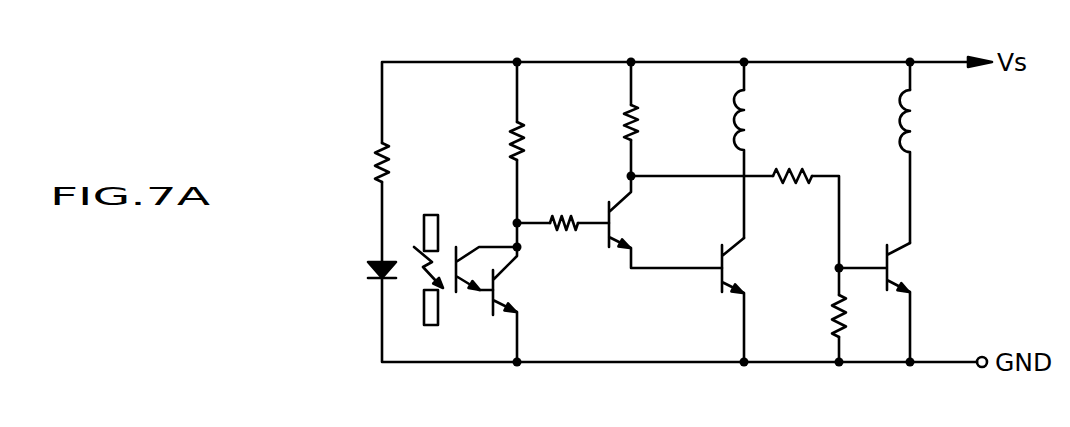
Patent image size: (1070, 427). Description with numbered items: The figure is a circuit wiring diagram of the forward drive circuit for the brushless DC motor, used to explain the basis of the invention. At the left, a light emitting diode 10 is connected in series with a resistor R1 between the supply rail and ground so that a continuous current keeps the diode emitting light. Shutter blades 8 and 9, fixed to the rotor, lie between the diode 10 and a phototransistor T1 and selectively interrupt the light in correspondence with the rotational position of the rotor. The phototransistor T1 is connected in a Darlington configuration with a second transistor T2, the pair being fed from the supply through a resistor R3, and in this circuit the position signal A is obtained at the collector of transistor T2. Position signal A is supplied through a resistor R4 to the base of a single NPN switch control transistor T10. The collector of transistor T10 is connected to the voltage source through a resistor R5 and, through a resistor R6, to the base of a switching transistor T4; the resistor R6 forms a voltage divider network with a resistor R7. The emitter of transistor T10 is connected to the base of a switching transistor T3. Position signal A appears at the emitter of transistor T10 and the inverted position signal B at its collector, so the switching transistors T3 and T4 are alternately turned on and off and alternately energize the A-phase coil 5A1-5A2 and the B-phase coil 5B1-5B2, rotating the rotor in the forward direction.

The resistor R1 is at (375, 170).
The resistor R3 is at (510, 140).
The resistor R4 is at (563, 239).
The resistor R5 is at (624, 121).
The resistor R6 is at (796, 185).
The resistor R7 is at (847, 313).
The phototransistor T1 is at (458, 266).
The second transistor T2 is at (498, 293).
The switching transistor T3 is at (728, 268).
The switching transistor T4 is at (894, 267).
The switch control transistor T10 is at (614, 222).
The shutter blade 8 is at (431, 214).
The shutter blade 9 is at (436, 306).
The light emitting diode 10 is at (367, 273).
The A-phase coil 5A1-5A2 is at (752, 117).
The B-phase coil 5B1-5B2 is at (918, 116).
The position signal A is at (523, 222).
The inverted position signal B is at (668, 176).